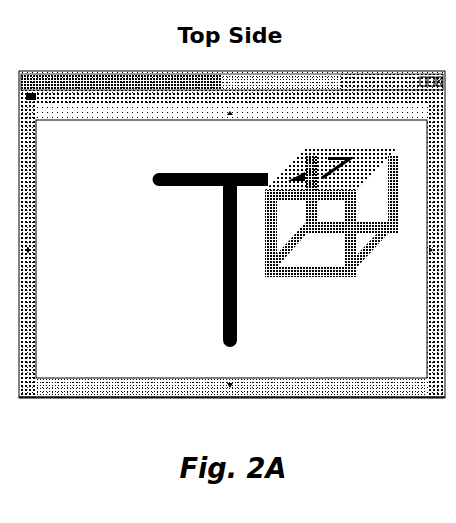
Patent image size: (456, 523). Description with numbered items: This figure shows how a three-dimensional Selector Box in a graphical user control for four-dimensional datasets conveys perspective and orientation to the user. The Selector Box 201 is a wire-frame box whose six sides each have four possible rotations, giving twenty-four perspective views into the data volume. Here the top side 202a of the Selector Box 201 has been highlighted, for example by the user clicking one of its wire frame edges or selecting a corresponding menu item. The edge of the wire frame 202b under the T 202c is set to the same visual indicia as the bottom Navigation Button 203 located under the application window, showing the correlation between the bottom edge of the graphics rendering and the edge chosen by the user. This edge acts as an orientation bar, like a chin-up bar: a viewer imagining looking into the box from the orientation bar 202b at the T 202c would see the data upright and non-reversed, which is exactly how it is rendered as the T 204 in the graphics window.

The Selector Box 201 is at (327, 249).
The top side 202a is at (286, 176).
The edge of the wire frame 202b is at (338, 192).
The T 202c is at (347, 160).
The bottom Navigation Button 203 is at (128, 377).
The T 204 is at (222, 268).